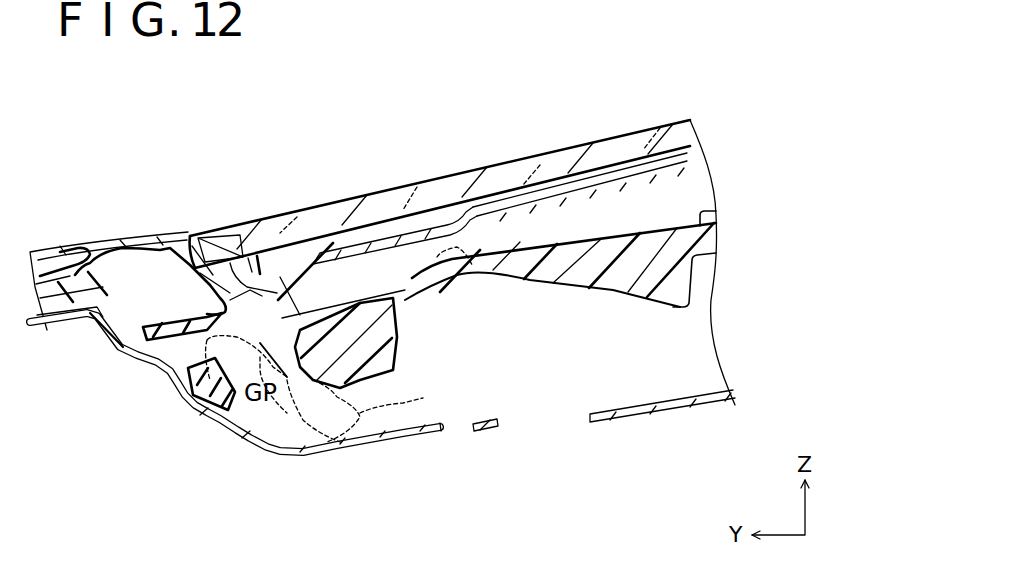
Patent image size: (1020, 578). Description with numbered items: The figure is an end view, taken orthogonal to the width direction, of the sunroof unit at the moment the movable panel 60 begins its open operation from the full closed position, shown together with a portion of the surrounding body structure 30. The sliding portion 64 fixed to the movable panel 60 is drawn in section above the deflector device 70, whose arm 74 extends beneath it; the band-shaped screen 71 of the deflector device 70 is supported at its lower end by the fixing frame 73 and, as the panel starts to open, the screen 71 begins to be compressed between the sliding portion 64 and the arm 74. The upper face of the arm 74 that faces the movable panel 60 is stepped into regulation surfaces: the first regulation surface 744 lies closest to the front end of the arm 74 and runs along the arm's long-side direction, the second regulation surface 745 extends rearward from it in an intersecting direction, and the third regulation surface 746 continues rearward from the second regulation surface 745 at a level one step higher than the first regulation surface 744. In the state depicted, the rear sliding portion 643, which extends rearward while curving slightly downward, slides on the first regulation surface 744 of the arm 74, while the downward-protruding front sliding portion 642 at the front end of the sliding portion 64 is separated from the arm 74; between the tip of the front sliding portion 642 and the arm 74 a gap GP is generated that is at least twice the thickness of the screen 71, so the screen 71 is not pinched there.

The vehicle body member 30 is at (62, 190).
The movable panel 60 is at (452, 170).
The sliding portion 64 is at (262, 296).
The front sliding portion 642 is at (215, 320).
The rear sliding portion 643 is at (443, 297).
The deflector device 70 is at (555, 373).
The screen 71 is at (331, 389).
The fixing frame 73 is at (183, 375).
The arm 74 is at (658, 303).
The first regulation surface 744 is at (400, 313).
The second regulation surface 745 is at (440, 246).
The third regulation surface 746 is at (714, 215).